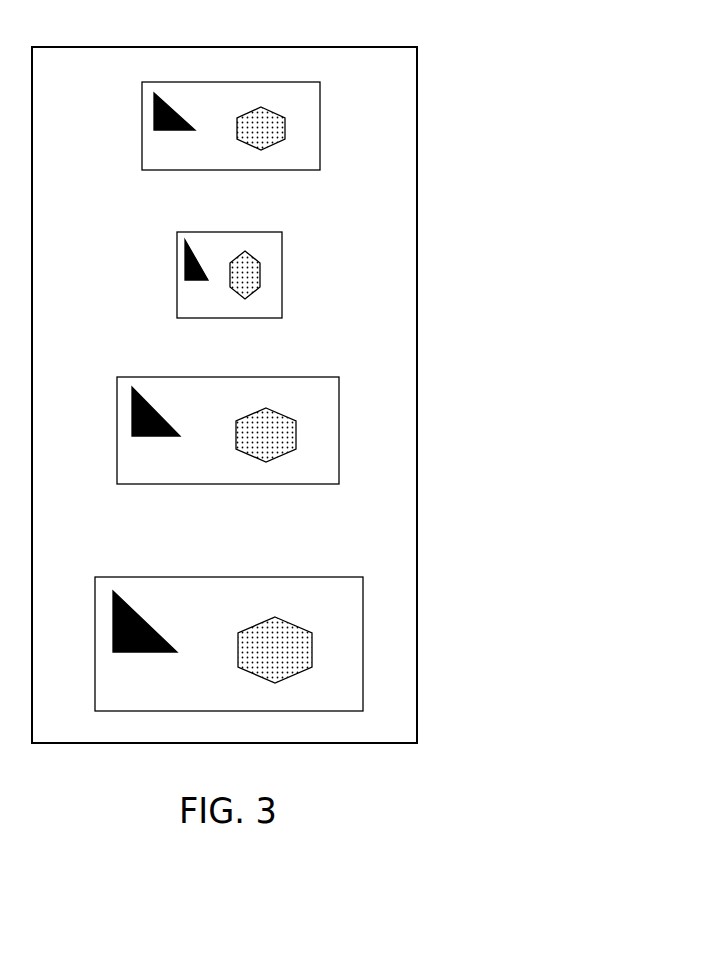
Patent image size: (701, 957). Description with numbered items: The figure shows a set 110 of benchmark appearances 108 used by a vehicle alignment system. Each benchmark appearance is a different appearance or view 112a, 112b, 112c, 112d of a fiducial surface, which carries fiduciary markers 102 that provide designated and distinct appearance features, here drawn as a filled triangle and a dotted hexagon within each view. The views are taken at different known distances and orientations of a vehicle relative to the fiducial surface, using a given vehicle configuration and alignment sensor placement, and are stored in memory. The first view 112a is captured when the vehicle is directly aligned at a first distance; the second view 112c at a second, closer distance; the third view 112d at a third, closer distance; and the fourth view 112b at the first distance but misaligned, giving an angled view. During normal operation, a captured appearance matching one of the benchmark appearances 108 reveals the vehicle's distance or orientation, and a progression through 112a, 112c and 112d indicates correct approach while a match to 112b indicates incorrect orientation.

The fiduciary markers 102 is at (250, 112).
The benchmark appearances 108 is at (303, 69).
The set of benchmark appearances 110 is at (417, 393).
The first benchmark appearance/view 112a is at (192, 82).
The fourth benchmark appearance/view 112b is at (283, 272).
The second benchmark appearance/view 112c is at (142, 377).
The third benchmark appearance/view 112d is at (120, 577).